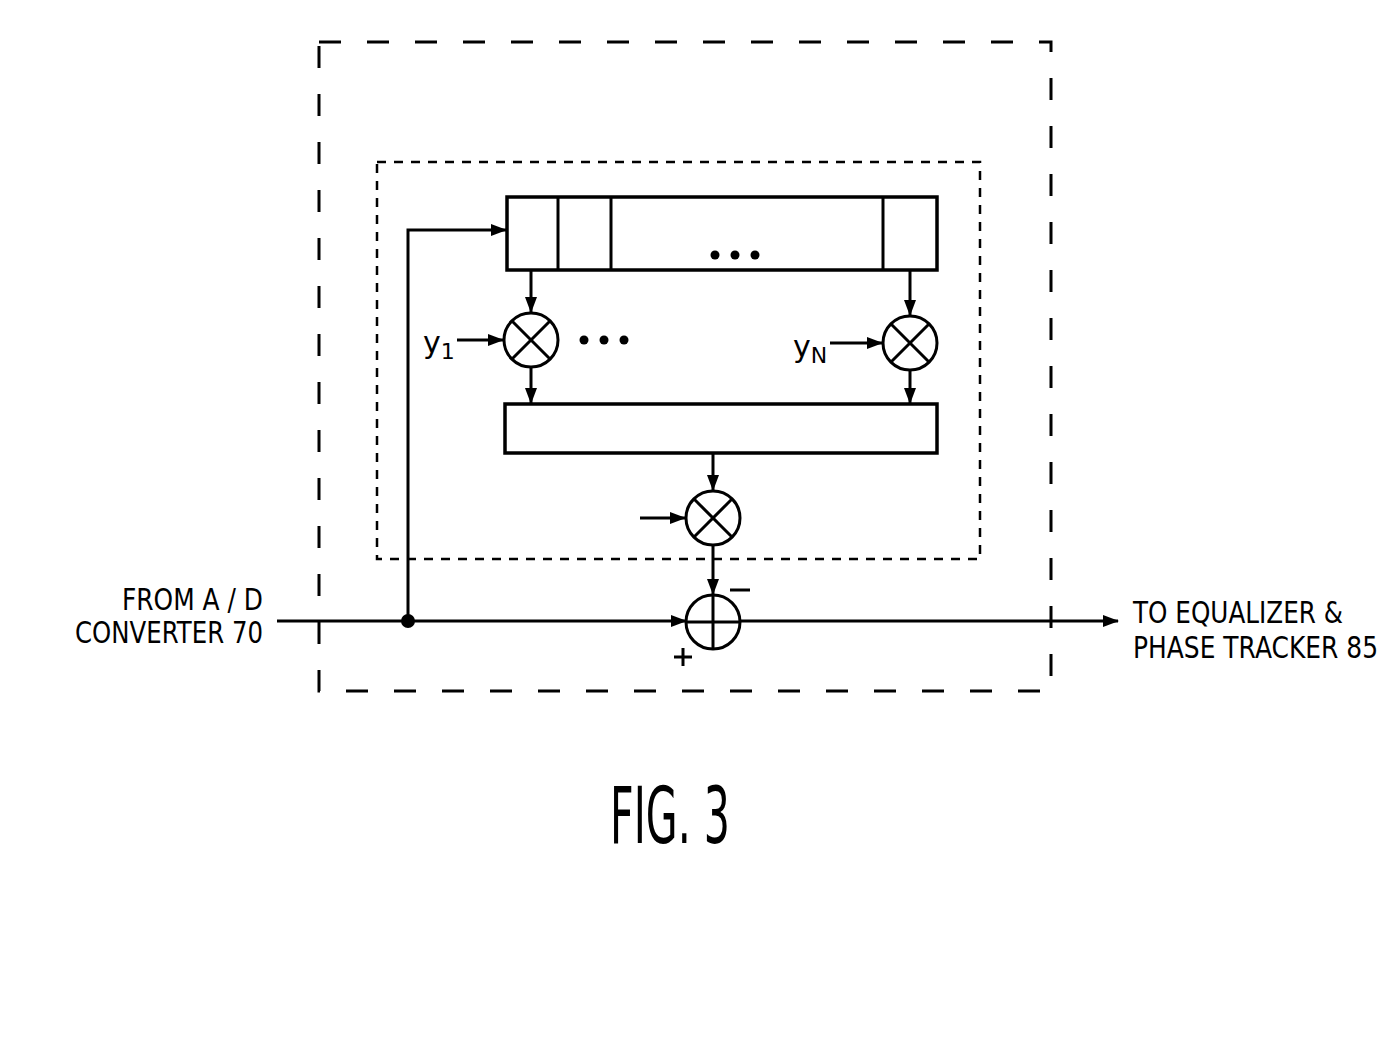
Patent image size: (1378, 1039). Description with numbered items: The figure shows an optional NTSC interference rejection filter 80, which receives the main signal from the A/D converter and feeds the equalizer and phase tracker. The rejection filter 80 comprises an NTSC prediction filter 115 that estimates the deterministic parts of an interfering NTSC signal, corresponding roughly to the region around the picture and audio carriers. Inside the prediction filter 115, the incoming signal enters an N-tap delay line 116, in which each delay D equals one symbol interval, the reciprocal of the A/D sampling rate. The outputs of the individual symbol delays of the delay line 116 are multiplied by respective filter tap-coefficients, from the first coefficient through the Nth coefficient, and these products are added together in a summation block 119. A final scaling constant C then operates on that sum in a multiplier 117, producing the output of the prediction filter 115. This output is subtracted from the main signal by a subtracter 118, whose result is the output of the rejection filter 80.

The NTSC interference rejection filter 80 is at (1051, 491).
The NTSC prediction filter 115 is at (900, 162).
The N-tap delay line 116 is at (893, 258).
The multiplier 117 is at (733, 523).
The subtracter 118 is at (723, 635).
The summation block 119 is at (873, 453).